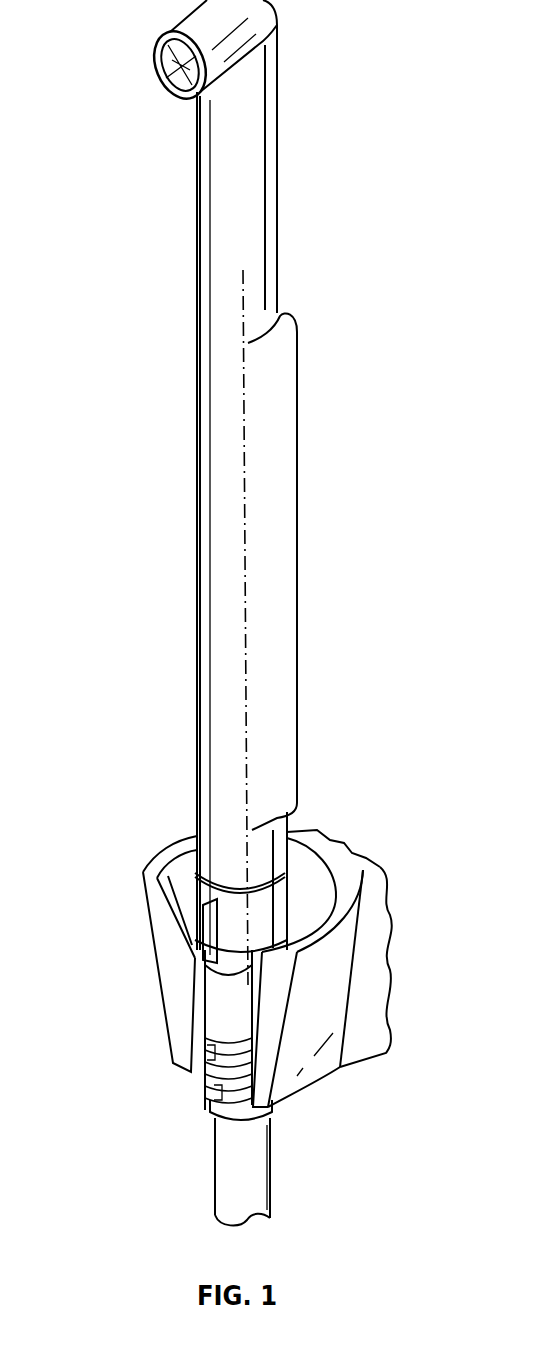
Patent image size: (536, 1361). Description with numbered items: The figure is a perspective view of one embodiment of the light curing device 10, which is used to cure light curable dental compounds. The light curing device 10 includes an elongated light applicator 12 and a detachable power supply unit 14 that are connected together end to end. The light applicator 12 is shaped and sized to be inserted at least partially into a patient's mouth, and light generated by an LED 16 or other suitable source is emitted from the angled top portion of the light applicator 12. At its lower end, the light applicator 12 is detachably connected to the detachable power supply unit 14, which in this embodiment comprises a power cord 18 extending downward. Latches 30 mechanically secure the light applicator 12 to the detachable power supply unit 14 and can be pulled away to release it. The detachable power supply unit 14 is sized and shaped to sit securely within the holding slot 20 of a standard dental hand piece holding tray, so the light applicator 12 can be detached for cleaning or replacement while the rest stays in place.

The light curing device 10 is at (186, 464).
The light applicator 12 is at (237, 330).
The detachable power supply unit 14 is at (230, 1022).
The LED 16 is at (161, 78).
The power cord 18 is at (270, 935).
The holding slot 20 is at (325, 1017).
The latches 30 is at (207, 930).